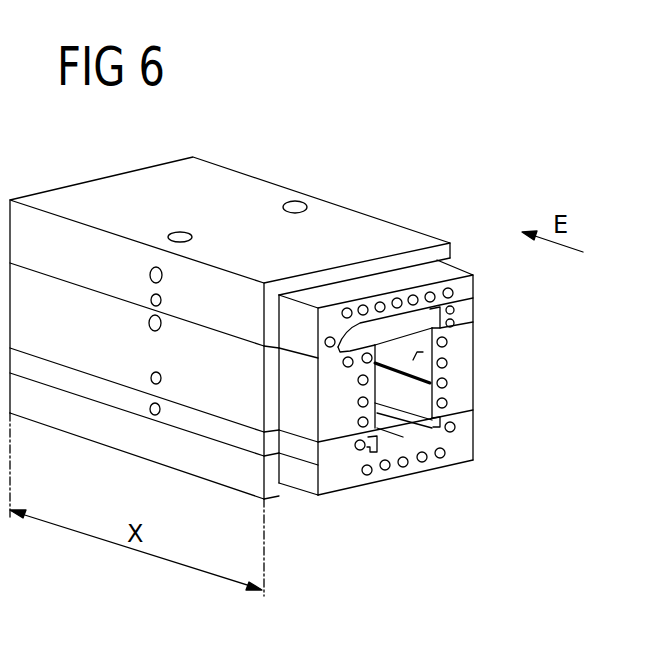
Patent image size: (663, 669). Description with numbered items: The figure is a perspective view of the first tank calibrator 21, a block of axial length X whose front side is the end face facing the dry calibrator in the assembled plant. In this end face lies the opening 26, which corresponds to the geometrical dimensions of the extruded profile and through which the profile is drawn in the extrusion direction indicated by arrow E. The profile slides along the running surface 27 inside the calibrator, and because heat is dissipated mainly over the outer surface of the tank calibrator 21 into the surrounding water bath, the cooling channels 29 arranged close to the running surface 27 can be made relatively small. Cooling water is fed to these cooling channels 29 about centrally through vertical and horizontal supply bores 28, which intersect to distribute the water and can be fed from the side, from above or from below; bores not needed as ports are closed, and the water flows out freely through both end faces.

The first tank calibrator 21 is at (362, 212).
The opening 26 is at (406, 439).
The running surface 27 is at (423, 358).
The supply bores 28 is at (180, 235).
The cooling channels 29 is at (450, 290).